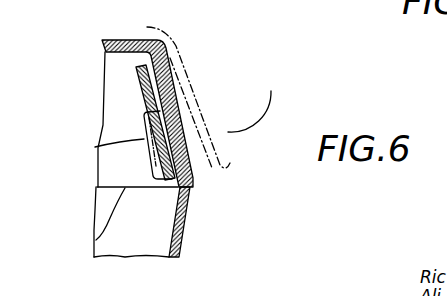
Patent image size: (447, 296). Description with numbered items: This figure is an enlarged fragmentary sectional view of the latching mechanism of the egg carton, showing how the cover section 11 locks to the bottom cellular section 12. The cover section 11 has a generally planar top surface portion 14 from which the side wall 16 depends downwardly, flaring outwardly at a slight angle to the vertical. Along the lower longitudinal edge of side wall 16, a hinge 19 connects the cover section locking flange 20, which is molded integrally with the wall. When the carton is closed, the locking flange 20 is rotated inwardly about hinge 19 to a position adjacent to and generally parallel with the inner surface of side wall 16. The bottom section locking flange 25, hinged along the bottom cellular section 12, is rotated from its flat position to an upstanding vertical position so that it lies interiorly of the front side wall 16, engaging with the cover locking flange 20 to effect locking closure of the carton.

The top surface portion 14 is at (127, 36).
The cover section 11 is at (172, 72).
The side wall 16 is at (172, 110).
The bottom section locking flange 25 is at (103, 144).
The cover section locking flange 20 is at (200, 168).
The hinge 19 is at (195, 187).
The bottom cellular section 12 is at (189, 216).